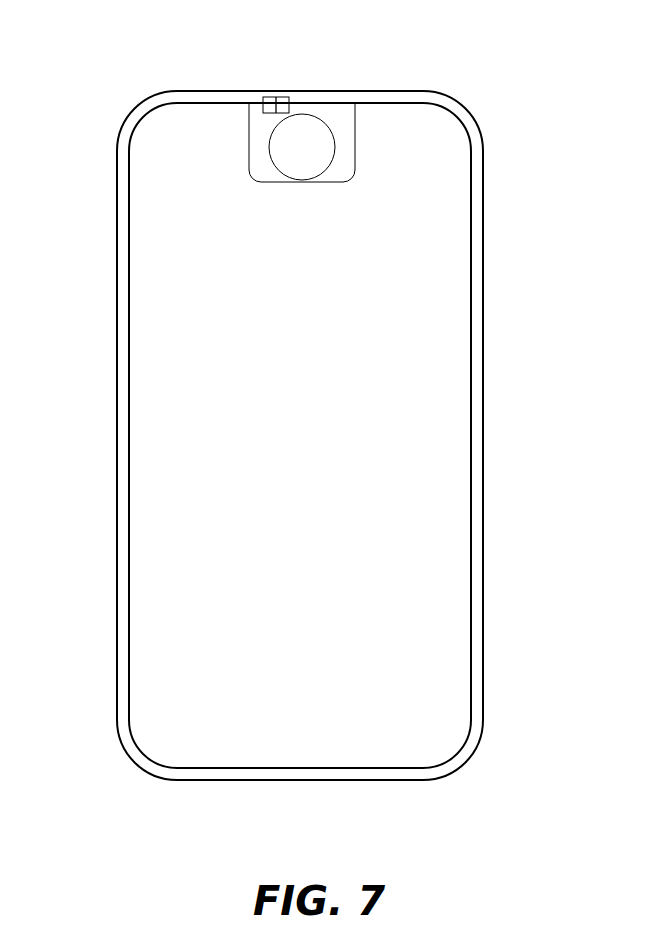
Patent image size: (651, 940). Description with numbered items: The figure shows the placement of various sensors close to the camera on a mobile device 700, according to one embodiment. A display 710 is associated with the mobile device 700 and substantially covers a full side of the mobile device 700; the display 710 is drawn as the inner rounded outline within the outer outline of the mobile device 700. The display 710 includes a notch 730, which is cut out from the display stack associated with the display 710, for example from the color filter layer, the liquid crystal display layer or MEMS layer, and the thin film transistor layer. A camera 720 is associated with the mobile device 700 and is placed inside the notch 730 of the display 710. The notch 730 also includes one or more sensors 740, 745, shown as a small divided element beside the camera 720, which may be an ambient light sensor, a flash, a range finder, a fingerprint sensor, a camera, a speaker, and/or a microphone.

The mobile device 700 is at (483, 385).
The display 710 is at (442, 147).
The camera 720 is at (317, 115).
The notch 730 is at (247, 162).
The sensor 740 is at (270, 97).
The sensor 745 is at (285, 97).